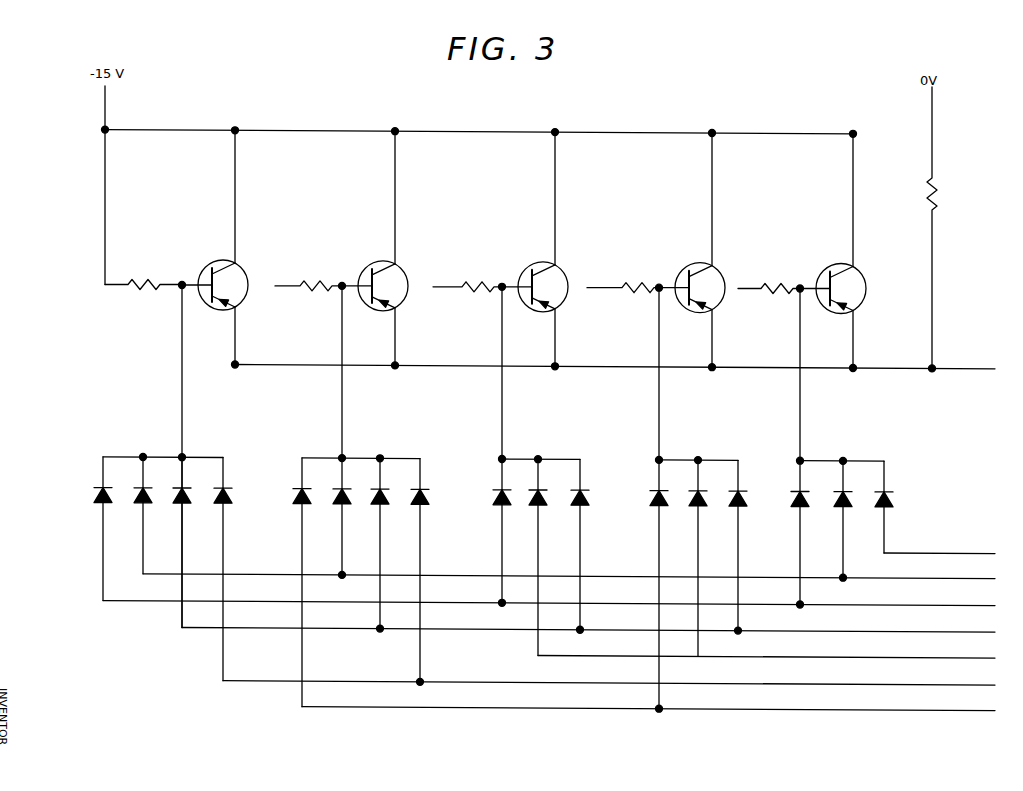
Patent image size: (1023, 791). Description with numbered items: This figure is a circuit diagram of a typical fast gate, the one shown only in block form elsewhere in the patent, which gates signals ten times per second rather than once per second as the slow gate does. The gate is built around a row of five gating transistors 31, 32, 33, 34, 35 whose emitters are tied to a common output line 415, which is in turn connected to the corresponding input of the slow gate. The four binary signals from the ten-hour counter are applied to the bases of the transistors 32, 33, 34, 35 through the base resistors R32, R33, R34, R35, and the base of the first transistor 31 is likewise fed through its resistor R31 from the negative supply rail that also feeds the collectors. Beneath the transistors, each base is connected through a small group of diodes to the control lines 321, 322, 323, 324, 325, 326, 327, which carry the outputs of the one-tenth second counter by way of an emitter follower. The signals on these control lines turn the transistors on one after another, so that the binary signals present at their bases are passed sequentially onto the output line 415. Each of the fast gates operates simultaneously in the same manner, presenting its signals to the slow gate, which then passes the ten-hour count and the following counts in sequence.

The gating transistor 31 is at (211, 260).
The gating transistor 32 is at (371, 261).
The gating transistor 33 is at (531, 262).
The gating transistor 34 is at (688, 262).
The gating transistor 35 is at (829, 263).
The base resistor R31 is at (157, 275).
The base resistor R32 is at (317, 276).
The base resistor R33 is at (477, 277).
The base resistor R34 is at (634, 278).
The base resistor R35 is at (775, 279).
The control line 321 is at (983, 553).
The control line 322 is at (965, 579).
The control line 323 is at (950, 606).
The control line 324 is at (935, 632).
The control line 325 is at (918, 658).
The control line 326 is at (905, 684).
The control line 327 is at (890, 710).
The output line 415 is at (987, 367).